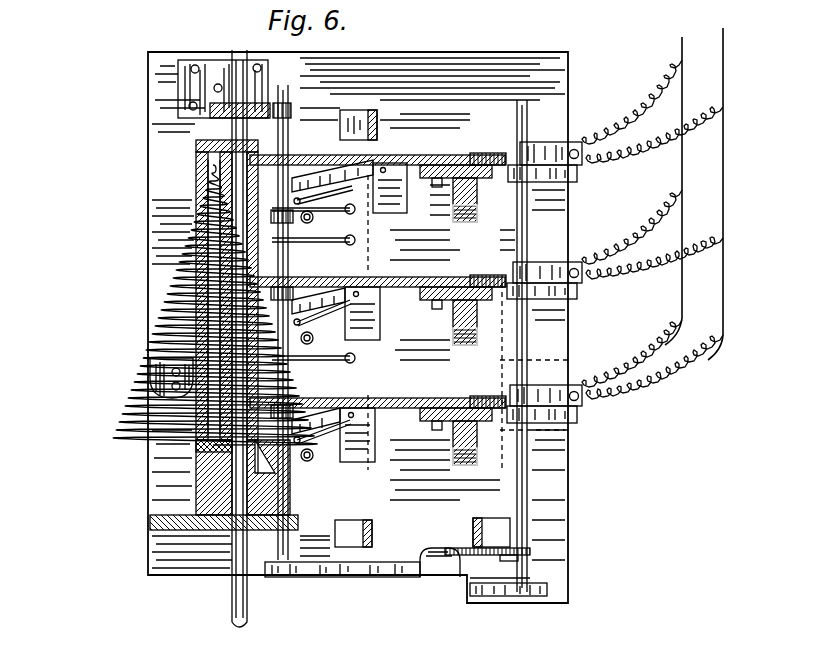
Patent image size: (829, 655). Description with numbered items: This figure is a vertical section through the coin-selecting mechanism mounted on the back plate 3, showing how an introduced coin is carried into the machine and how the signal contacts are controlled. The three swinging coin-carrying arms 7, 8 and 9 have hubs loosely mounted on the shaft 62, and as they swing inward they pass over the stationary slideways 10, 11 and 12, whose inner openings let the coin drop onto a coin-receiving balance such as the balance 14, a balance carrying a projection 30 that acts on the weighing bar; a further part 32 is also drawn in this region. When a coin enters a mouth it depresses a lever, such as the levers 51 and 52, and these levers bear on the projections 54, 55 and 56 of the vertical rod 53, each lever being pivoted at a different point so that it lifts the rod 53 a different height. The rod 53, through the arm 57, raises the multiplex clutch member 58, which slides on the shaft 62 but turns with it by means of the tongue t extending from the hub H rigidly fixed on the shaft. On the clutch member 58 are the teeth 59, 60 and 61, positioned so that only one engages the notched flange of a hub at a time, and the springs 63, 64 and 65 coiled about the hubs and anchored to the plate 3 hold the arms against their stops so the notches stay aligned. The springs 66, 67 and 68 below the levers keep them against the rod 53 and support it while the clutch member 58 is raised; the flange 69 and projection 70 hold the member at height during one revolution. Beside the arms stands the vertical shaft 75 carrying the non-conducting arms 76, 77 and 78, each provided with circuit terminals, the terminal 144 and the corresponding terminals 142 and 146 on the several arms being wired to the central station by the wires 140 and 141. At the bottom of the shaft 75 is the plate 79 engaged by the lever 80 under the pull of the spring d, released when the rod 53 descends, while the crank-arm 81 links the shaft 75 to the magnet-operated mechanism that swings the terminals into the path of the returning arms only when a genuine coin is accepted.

The plate 3 is at (160, 190).
The coin-carrying arm 7 is at (384, 398).
The coin-carrying arm 8 is at (414, 277).
The coin-carrying arm 9 is at (330, 156).
The stationary slideway 10 is at (480, 421).
The stationary slideway 11 is at (480, 298).
The stationary slideway 12 is at (480, 178).
The coin-receiving balance 14 is at (95, 522).
The projection 30 is at (380, 412).
The coin box 32 is at (456, 548).
The lever 51 is at (385, 300).
The lever 52 is at (410, 178).
The vertical rod 53 is at (290, 98).
The projection 54 is at (272, 413).
The projection 55 is at (272, 294).
The projection 56 is at (332, 176).
The arm 57 is at (272, 462).
The multiplex clutch member 58 is at (200, 318).
The engaging projection 59 is at (198, 430).
The engaging projection 60 is at (200, 300).
The engaging projection 61 is at (200, 168).
The shaft 62 is at (250, 40).
The coil-spring 63 is at (270, 362).
The coil-spring 64 is at (345, 246).
The coil-spring 65 is at (303, 214).
The spring 66 is at (308, 444).
The spring 67 is at (312, 326).
The spring 68 is at (340, 192).
The flange 69 is at (172, 358).
The projection 70 is at (172, 378).
The vertically-disposed shaft 75 is at (517, 240).
The arm 76 is at (552, 423).
The arm 77 is at (555, 299).
The arm 78 is at (555, 182).
The plate 79 is at (550, 596).
The lever 80 is at (362, 578).
The crank-arm 81 is at (505, 560).
The wire 140 is at (723, 166).
The wire 141 is at (682, 168).
The terminal 142 is at (528, 388).
The terminal 144 is at (528, 265).
The terminal 146 is at (532, 146).
The tongue t is at (196, 462).
The hub H is at (196, 494).
The coiled spring d is at (428, 578).